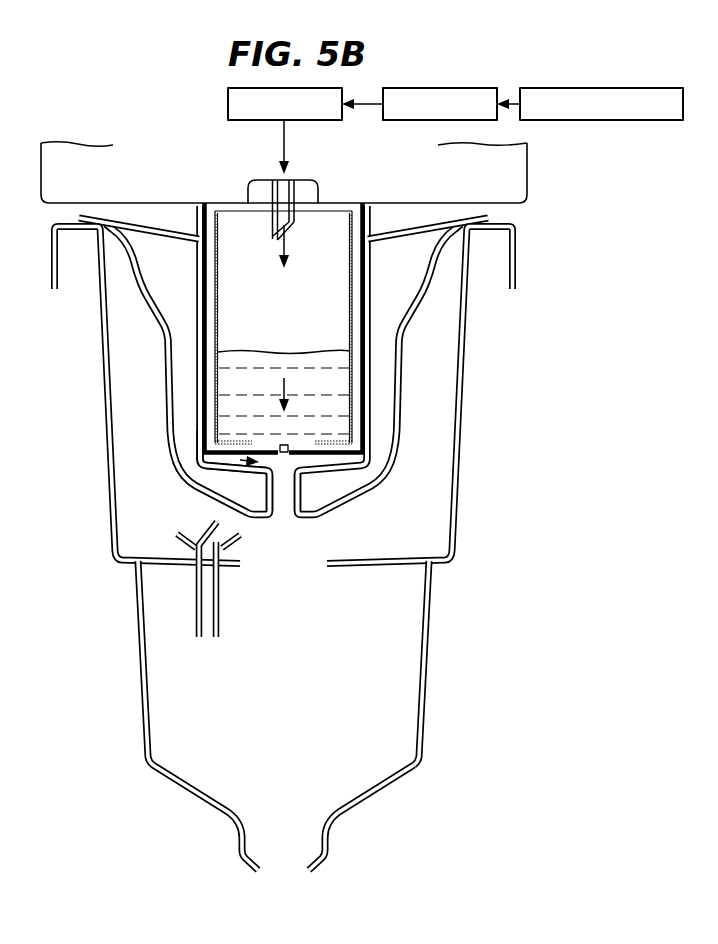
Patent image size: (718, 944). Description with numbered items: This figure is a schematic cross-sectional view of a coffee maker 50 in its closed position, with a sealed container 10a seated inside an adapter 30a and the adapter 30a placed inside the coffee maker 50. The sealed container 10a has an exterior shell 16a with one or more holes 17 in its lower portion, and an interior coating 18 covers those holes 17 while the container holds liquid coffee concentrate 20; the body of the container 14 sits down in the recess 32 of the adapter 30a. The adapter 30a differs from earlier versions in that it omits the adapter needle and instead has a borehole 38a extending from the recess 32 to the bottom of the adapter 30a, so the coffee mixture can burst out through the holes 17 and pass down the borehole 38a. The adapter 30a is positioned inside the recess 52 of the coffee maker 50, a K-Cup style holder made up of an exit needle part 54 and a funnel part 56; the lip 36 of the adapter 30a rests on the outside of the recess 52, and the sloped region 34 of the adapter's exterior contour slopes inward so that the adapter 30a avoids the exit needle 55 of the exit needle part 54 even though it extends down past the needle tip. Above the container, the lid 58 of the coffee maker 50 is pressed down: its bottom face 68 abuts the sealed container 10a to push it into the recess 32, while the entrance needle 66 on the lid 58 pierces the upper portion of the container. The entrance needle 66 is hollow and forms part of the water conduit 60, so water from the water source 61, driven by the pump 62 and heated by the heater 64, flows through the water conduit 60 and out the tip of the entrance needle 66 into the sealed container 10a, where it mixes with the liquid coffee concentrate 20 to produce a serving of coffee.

The sealed container 10a is at (196, 224).
The cartridge container 14 is at (367, 218).
The exterior shell 16a is at (366, 366).
The holes 17 is at (288, 452).
The interior coating 18 is at (350, 302).
The liquid coffee concentrate 20 is at (254, 368).
The adapter 30a is at (124, 347).
The recess 32 is at (198, 466).
The sloped region 34 is at (210, 500).
The lip 36 is at (84, 220).
The borehole 38a is at (283, 490).
The coffee maker 50 is at (97, 543).
The recess 52 is at (438, 514).
The exit needle part 54 is at (468, 413).
The exit needle 55 is at (196, 526).
The funnel part 56 is at (435, 670).
The lid 58 is at (78, 150).
The water conduit 60 is at (286, 185).
The water source 61 is at (601, 88).
The pump 62 is at (440, 88).
The heater 64 is at (227, 104).
The entrance needle 66 is at (270, 233).
The bottom face 68 is at (518, 205).